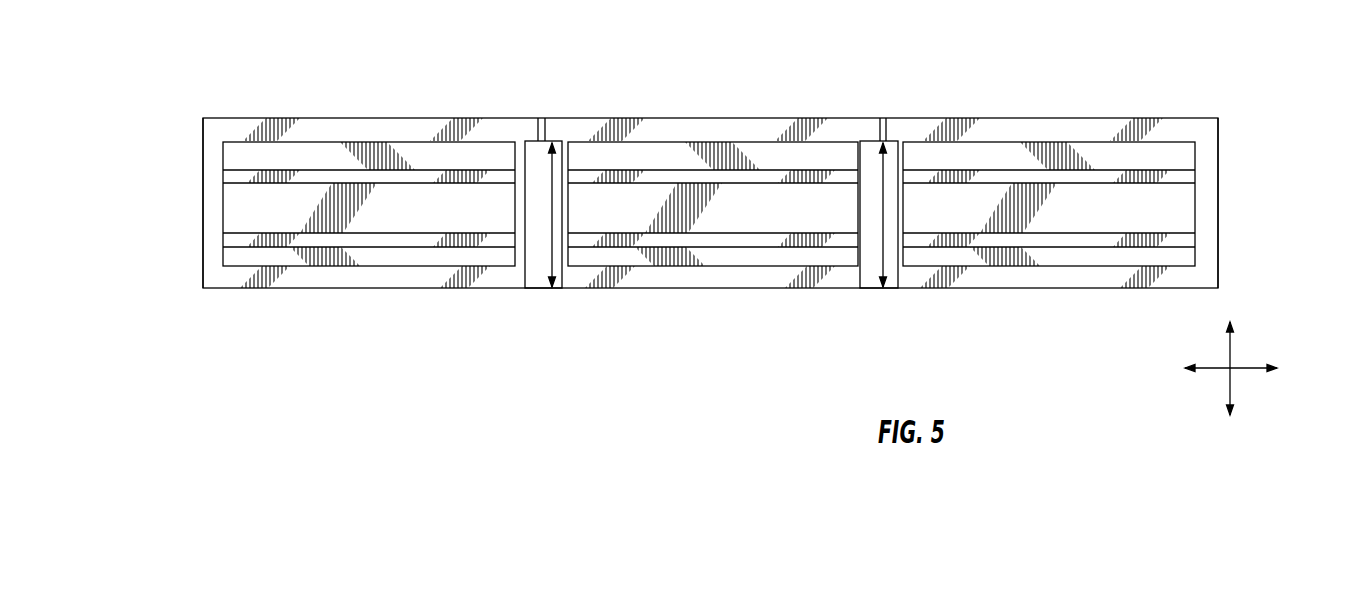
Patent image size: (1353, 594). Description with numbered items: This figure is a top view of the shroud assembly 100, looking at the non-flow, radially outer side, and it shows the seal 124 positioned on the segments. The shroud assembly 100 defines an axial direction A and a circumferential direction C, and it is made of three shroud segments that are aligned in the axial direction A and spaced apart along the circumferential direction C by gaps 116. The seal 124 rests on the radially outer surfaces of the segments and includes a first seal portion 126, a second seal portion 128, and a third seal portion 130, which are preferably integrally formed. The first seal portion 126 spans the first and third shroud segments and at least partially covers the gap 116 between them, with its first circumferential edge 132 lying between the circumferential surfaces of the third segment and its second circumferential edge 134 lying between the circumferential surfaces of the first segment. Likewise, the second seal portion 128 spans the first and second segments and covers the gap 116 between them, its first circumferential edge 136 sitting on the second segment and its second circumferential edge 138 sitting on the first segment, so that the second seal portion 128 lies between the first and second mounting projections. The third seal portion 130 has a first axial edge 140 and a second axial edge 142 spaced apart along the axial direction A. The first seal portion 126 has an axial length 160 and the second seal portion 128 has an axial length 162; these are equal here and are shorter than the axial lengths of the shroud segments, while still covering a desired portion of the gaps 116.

The shroud assembly 100 is at (372, 55).
The gap 116 is at (882, 114).
The seal 124 is at (534, 302).
The first seal portion 126 is at (533, 205).
The second seal portion 128 is at (891, 165).
The third seal portion 130 is at (737, 280).
The first circumferential edge 132 is at (520, 147).
The second circumferential edge 134 is at (524, 251).
The first circumferential edge 136 is at (900, 273).
The second circumferential edge 138 is at (860, 252).
The first axial edge 140 is at (607, 288).
The second axial edge 142 is at (652, 268).
The axial length 160 is at (547, 268).
The axial length 162 is at (890, 248).
The axial direction A is at (1232, 357).
The circumferential direction C is at (1247, 370).